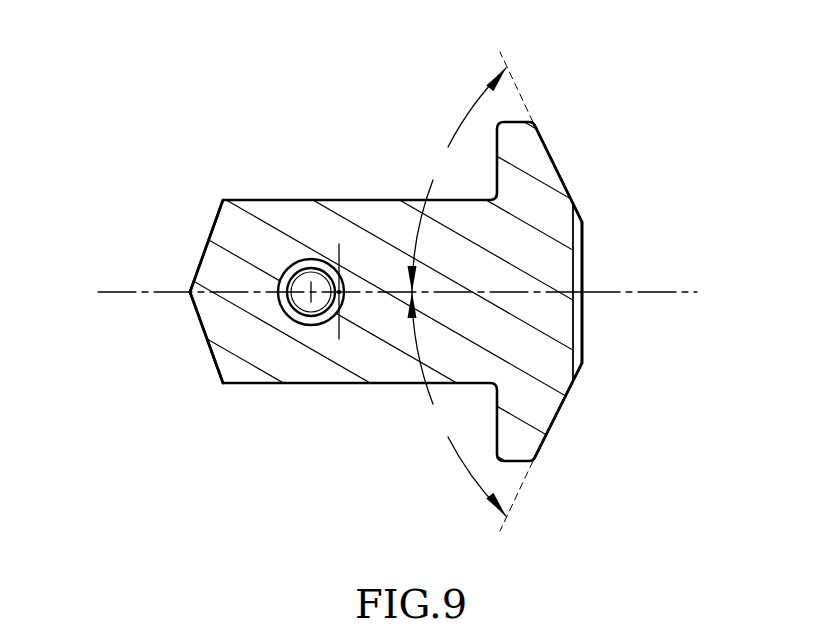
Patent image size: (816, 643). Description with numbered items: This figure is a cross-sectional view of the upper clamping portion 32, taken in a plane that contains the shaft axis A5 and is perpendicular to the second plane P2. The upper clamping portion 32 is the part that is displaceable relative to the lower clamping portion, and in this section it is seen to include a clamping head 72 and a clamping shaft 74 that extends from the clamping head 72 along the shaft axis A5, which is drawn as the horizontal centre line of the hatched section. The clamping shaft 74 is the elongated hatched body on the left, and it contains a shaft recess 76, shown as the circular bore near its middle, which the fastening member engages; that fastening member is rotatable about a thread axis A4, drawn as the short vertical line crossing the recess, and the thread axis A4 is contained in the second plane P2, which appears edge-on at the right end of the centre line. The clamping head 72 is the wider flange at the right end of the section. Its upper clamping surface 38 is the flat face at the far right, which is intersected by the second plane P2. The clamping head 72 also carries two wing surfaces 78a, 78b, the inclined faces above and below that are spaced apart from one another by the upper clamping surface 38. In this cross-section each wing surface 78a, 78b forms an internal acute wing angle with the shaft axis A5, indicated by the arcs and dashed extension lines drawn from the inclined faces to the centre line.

The upper clamping portion 32 is at (240, 245).
The upper clamping surface 38 is at (583, 260).
The clamping head 72 is at (545, 360).
The clamping shaft 74 is at (240, 338).
The shaft recess 76 is at (304, 313).
The wing surface 78a is at (557, 163).
The wing surface 78b is at (555, 420).
The thread axis A4 is at (342, 300).
The shaft axis A5 is at (320, 296).
The second plane P2 is at (657, 294).